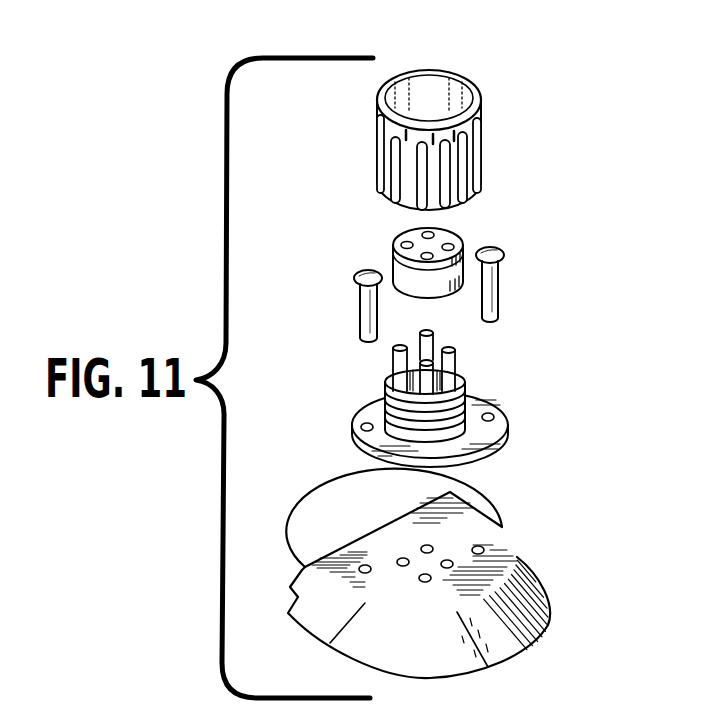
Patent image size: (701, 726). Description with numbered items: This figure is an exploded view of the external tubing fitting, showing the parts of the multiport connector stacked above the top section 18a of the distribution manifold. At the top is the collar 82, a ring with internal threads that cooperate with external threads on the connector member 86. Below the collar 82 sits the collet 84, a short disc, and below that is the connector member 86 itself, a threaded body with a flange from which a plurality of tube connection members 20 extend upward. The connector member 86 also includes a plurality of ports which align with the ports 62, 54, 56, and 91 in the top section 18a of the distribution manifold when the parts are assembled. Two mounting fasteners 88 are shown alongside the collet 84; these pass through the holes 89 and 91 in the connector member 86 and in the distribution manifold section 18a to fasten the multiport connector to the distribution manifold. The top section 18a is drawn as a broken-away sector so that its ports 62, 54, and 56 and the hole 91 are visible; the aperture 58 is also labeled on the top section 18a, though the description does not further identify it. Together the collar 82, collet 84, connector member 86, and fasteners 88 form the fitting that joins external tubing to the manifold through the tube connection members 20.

The collar 82 is at (473, 148).
The collet 84 is at (458, 230).
The mounting fasteners 88 is at (362, 313).
The tube connection members 20 is at (462, 357).
The connector member 86 is at (502, 410).
The hole 89 is at (360, 424).
The top section 18a is at (502, 527).
The port 56 is at (420, 547).
The hole 91 is at (362, 568).
The pin aperture 58 is at (403, 567).
The port 54 is at (450, 566).
The port 62 is at (427, 582).